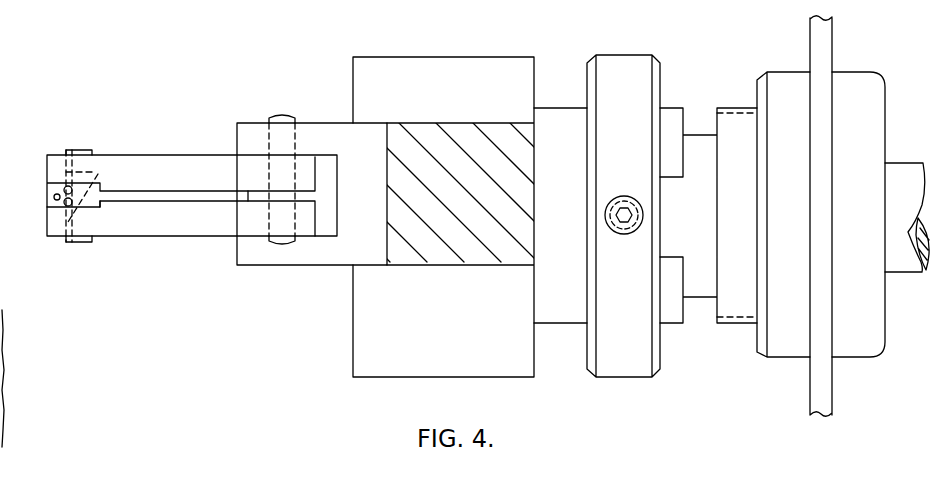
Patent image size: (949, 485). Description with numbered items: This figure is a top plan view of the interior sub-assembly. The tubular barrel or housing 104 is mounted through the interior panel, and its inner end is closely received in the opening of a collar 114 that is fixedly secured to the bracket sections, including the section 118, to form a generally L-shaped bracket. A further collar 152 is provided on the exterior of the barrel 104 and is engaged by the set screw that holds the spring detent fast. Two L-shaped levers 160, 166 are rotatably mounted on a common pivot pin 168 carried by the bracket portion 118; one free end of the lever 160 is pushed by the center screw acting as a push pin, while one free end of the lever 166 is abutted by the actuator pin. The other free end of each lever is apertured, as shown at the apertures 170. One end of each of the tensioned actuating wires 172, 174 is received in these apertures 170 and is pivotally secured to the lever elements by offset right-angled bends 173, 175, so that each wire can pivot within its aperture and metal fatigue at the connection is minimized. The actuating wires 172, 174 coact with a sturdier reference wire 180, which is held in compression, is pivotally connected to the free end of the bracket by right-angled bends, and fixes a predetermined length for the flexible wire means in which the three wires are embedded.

The tubular barrel or housing 104 is at (577, 291).
The collar 114 is at (452, 336).
The section of bracket 118 is at (375, 256).
The collar 152 is at (641, 371).
The L-shaped lever 160 is at (137, 237).
The L-shaped lever 166 is at (157, 155).
The pivot pin 168 is at (283, 115).
The apertures 170 is at (99, 194).
The actuating wire 172 is at (88, 153).
The right-angled bend 173 is at (66, 151).
The actuating wire 174 is at (74, 238).
The right-angled bend 175 is at (65, 190).
The reference wire 180 is at (54, 198).